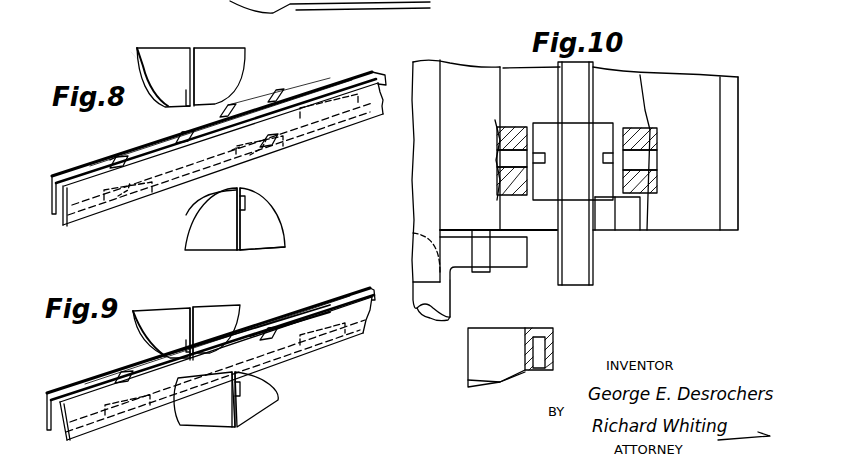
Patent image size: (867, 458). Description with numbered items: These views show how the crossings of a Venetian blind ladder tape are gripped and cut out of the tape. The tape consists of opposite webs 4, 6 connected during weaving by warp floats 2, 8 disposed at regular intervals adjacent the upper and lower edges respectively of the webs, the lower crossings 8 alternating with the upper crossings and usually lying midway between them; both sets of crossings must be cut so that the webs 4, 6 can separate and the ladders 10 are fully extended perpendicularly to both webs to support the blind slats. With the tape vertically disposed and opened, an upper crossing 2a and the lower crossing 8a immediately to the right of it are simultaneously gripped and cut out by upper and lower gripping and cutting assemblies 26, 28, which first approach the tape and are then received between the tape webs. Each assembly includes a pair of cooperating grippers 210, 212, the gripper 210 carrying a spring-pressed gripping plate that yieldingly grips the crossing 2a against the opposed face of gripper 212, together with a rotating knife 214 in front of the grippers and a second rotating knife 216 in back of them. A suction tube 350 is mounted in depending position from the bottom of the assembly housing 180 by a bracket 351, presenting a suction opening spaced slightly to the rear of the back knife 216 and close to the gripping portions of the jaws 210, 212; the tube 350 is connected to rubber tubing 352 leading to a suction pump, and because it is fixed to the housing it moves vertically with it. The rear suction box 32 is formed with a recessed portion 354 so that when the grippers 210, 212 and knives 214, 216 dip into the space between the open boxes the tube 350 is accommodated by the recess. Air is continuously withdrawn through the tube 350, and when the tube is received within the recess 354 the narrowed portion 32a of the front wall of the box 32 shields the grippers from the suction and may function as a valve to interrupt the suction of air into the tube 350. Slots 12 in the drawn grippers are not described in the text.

In FIG. 8, the warp float 2 is at (110, 160).
In FIG. 9, the warp float 2 is at (117, 378).
In FIG. 8, the upper crossing 2a is at (180, 134).
In FIG. 8, the web 4 is at (308, 115).
In FIG. 9, the web 4 is at (216, 368).
In FIG. 8, the web 6 is at (288, 92).
In FIG. 9, the web 6 is at (211, 359).
In FIG. 8, the warp float 8 is at (104, 204).
In FIG. 8, the lower crossing 8a is at (251, 158).
In FIG. 8, the ladder 10 is at (226, 113).
In FIG. 8, the slot 12 is at (238, 190).
In FIG. 8, the upper gripping and cutting assembly 26 is at (133, 58).
In FIG. 8, the lower gripping and cutting assembly 28 is at (286, 224).
In FIG. 9, the lower gripping and cutting assembly 28 is at (205, 366).
In FIG. 8, the gripper 210 is at (158, 68).
In FIG. 10, the gripper 210 is at (578, 284).
In FIG. 8, the gripper 212 is at (215, 60).
In FIG. 10, the assembly housing 180 is at (692, 226).
In FIG. 10, the rotating knife 214 is at (595, 218).
In FIG. 10, the rotating knife 216 is at (556, 218).
In FIG. 10, the rear suction box 32 is at (470, 354).
In FIG. 10, the narrowed portion 32a is at (553, 328).
In FIG. 10, the suction tube 350 is at (508, 261).
In FIG. 10, the bracket 351 is at (479, 238).
In FIG. 10, the rubber tubing 352 is at (422, 312).
In FIG. 10, the recessed portion 354 is at (490, 350).